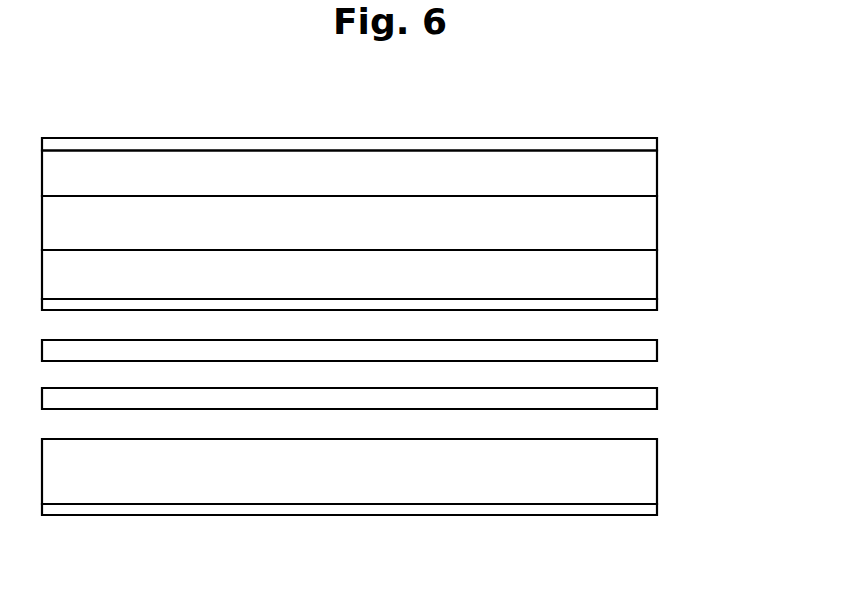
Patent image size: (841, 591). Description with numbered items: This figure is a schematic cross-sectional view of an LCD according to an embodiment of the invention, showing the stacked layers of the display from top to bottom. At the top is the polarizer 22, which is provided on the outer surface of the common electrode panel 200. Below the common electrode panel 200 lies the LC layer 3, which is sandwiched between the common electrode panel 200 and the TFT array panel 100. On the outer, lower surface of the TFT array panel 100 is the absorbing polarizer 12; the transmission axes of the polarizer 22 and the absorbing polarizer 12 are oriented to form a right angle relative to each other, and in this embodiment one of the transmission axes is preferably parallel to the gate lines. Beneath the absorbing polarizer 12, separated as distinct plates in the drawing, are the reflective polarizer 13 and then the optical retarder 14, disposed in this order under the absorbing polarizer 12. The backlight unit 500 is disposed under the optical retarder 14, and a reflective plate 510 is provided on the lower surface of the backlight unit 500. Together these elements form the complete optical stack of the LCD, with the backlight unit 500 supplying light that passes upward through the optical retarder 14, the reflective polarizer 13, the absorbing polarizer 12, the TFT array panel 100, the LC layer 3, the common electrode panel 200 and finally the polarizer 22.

The polarizer 22 is at (657, 145).
The common electrode panel 200 is at (657, 175).
The LC layer 3 is at (657, 223).
The TFT array panel 100 is at (657, 273).
The absorbing polarizer 12 is at (657, 307).
The reflective polarizer 13 is at (657, 352).
The optical retarder 14 is at (657, 398).
The backlight unit 500 is at (657, 470).
The reflective plate 510 is at (657, 509).